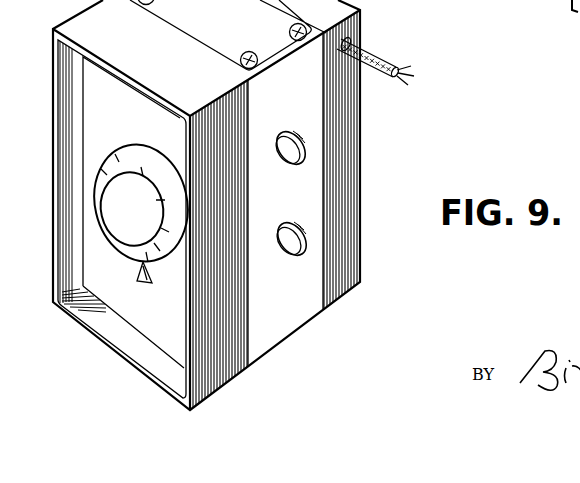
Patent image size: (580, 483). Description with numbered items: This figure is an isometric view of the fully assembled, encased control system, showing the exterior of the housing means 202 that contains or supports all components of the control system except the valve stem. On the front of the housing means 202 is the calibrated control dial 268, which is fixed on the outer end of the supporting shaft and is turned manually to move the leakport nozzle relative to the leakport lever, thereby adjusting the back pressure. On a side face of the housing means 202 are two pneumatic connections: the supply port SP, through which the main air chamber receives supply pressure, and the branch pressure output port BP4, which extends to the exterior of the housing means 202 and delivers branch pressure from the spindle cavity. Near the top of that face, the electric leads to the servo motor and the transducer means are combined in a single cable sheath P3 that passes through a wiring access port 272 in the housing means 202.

The housing means 202 is at (299, 111).
The calibrated control dial 268 is at (137, 238).
The branch pressure output port BP4 is at (288, 167).
The supply port SP is at (283, 230).
The wiring access port 272 is at (351, 40).
The cable sheath P3 is at (392, 60).